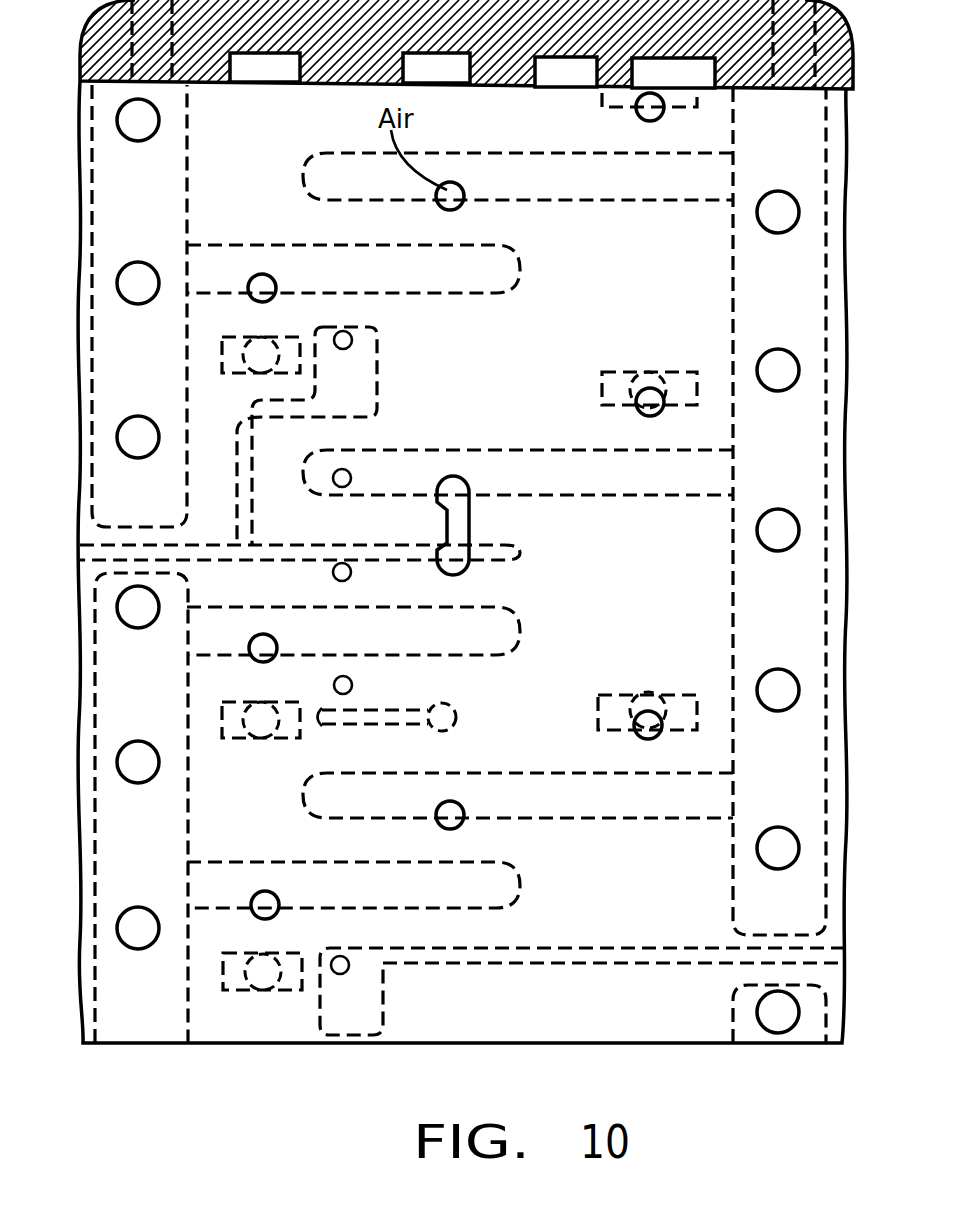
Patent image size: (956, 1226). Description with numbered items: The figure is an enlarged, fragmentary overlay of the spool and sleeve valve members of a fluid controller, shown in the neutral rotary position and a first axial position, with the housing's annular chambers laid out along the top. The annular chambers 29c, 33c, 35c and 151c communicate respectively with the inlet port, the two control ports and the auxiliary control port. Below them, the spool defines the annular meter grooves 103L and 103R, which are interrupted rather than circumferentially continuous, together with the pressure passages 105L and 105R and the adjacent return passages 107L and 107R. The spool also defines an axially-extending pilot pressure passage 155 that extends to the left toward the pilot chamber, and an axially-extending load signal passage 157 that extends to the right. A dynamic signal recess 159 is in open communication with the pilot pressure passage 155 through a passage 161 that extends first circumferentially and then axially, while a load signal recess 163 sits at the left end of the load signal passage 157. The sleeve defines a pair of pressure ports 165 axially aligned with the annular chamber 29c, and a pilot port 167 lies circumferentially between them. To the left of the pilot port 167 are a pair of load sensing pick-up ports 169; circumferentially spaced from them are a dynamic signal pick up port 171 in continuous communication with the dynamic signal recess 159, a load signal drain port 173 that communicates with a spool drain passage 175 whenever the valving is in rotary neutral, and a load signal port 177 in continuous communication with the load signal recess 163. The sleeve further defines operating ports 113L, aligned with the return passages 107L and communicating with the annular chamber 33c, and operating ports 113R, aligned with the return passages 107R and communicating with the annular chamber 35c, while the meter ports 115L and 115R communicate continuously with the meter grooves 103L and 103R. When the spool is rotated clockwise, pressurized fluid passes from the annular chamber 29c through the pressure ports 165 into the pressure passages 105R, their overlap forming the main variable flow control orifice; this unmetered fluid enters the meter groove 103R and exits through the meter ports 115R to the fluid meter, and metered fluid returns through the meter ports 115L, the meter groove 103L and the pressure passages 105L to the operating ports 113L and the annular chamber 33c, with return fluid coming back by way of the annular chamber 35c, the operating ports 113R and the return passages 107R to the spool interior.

The annular chamber 33c is at (267, 67).
The annular chamber 29c is at (430, 67).
The annular chamber 151c is at (572, 72).
The annular chamber 35c is at (665, 70).
The annular meter groove 103L is at (140, 182).
The annular meter groove 103R is at (773, 272).
The pressure passage 105L is at (468, 283).
The pressure passage 105R is at (570, 182).
The return passage 107L is at (262, 740).
The return passage 107R is at (650, 372).
The operating port 113L is at (265, 633).
The operating port 113R is at (643, 410).
The meter port 115L is at (140, 437).
The meter port 115R is at (780, 690).
The pilot pressure passage 155 is at (488, 565).
The load signal passage 157 is at (607, 958).
The dynamic signal recess 159 is at (347, 378).
The passage 161 is at (247, 460).
The load signal recess 163 is at (352, 1007).
The pressure port 165 is at (460, 206).
The pilot port 167 is at (470, 525).
The load sensing pick-up port 169 is at (350, 478).
The dynamic signal pick up port 171 is at (352, 341).
The load signal drain port 173 is at (352, 686).
The drain passage 175 is at (386, 714).
The load signal port 177 is at (350, 967).